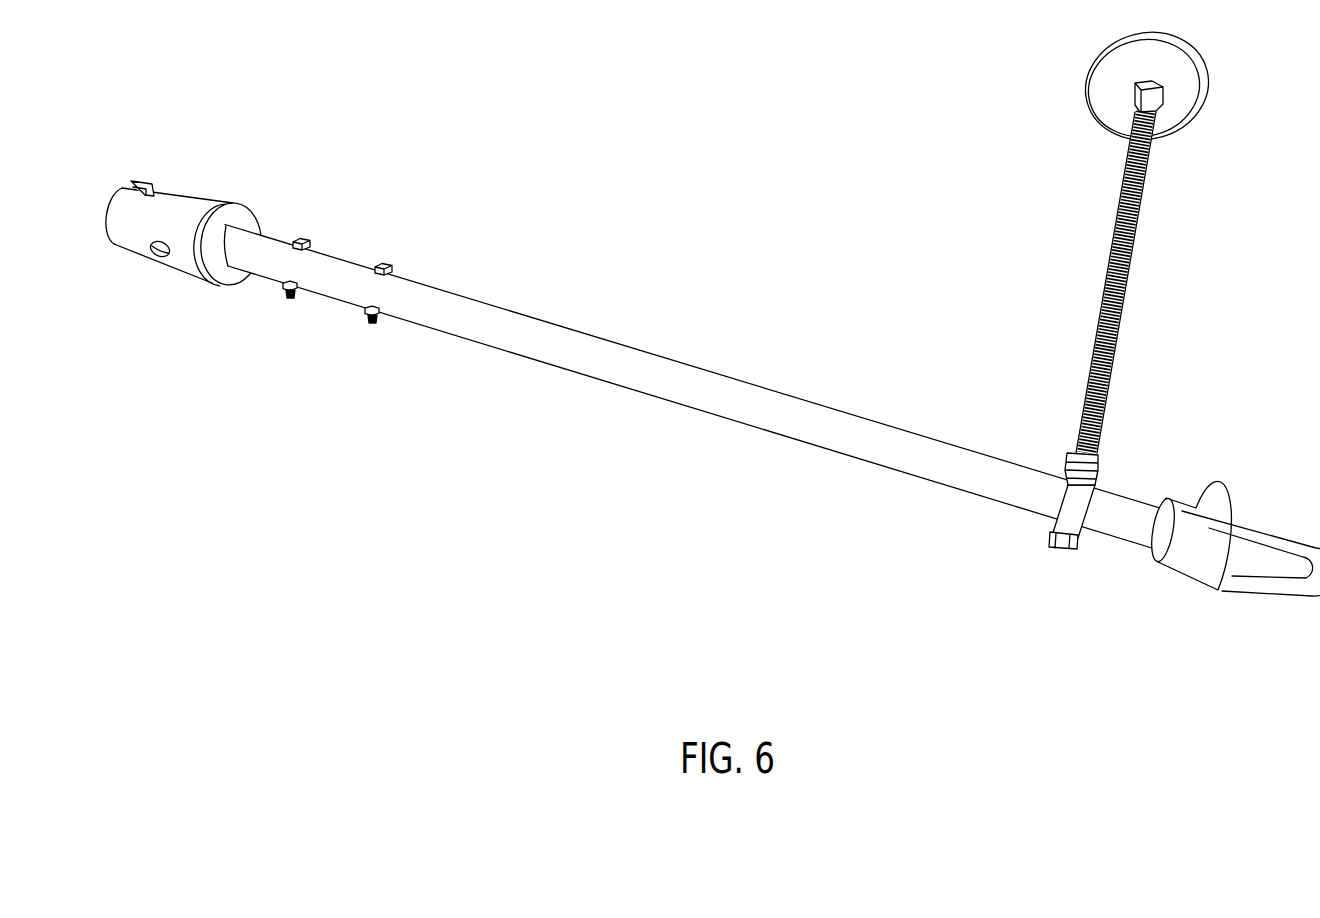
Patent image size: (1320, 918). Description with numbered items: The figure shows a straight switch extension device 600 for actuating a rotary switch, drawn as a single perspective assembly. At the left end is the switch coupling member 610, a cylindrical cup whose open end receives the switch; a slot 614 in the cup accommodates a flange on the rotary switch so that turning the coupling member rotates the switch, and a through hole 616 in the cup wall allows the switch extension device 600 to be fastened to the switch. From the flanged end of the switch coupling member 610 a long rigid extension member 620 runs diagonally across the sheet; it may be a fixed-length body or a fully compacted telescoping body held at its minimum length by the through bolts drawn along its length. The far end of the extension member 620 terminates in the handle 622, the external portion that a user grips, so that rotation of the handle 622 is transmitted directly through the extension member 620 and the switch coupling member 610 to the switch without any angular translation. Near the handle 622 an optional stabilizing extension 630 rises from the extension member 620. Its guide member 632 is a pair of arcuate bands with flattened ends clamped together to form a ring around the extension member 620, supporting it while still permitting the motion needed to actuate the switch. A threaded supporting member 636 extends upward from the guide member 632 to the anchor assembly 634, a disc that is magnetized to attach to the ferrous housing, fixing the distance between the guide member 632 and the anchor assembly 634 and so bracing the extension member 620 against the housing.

The switch extension device 600 is at (741, 261).
The switch coupling member 610 is at (192, 191).
The slot 614 is at (133, 182).
The through hole 616 is at (158, 258).
The extension member 620 is at (493, 312).
The handle 622 is at (1227, 512).
The stabilizing extension 630 is at (1130, 282).
The guide member 632 is at (1070, 549).
The anchor assembly 634 is at (1177, 118).
The supporting member 636 is at (1122, 193).